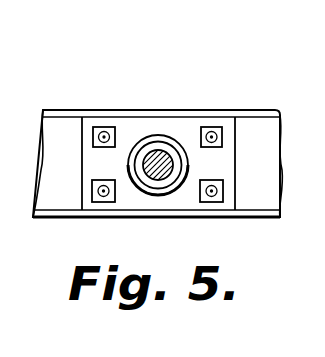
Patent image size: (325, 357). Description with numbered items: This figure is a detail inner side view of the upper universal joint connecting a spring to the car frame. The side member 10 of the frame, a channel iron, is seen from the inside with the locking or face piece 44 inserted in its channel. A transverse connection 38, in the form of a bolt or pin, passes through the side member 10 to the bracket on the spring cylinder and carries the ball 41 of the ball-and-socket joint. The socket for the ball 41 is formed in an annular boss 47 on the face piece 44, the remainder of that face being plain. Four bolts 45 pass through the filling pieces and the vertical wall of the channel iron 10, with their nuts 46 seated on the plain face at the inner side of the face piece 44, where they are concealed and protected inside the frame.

The side member 10 is at (256, 163).
The transverse connection 38 is at (172, 163).
The ball 41 is at (158, 143).
The face piece 44 is at (132, 127).
The bolts 45 is at (107, 135).
The nuts 46 is at (213, 133).
The annular boss 47 is at (165, 188).